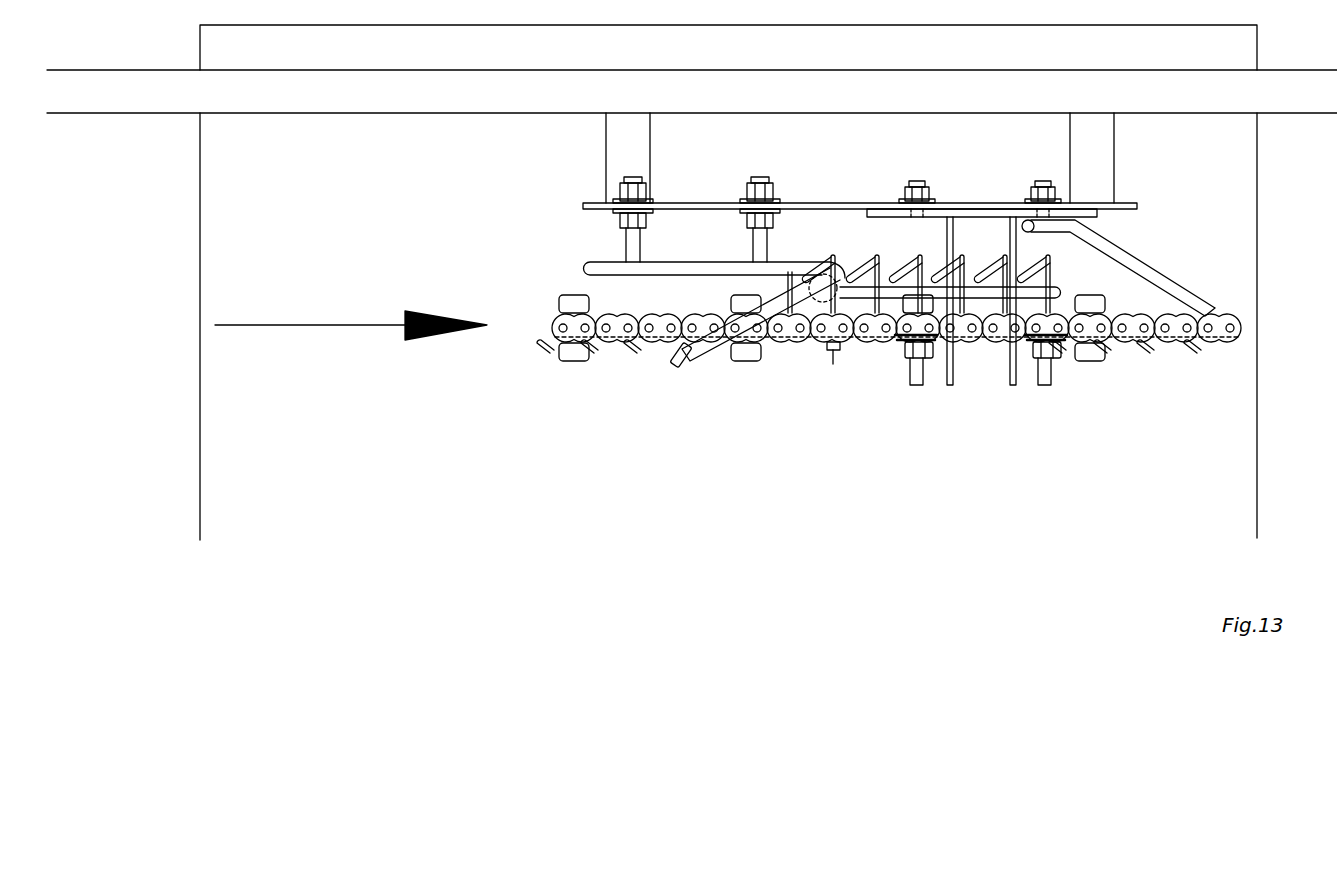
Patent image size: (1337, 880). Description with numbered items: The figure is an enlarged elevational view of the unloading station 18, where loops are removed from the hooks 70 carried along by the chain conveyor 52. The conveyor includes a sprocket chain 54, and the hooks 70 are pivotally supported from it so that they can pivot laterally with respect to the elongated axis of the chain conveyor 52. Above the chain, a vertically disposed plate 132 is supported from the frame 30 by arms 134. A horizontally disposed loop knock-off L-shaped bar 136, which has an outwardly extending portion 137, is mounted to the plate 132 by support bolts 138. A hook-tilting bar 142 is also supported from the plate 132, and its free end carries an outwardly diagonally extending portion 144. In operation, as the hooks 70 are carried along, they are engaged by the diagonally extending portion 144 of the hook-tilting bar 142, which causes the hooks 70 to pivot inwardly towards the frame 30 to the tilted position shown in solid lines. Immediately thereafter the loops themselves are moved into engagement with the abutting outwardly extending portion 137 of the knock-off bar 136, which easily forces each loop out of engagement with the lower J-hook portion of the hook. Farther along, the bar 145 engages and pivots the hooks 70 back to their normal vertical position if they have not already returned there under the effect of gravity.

The unloading station 18 is at (858, 464).
The frame 30 is at (848, 75).
The chain conveyor 52 is at (869, 355).
The sprocket chain 54 is at (560, 322).
The hooks 70 is at (643, 352).
The plate 132 is at (800, 203).
The arms 134 is at (606, 150).
The loop knock-off L-shaped bar 136 is at (590, 265).
The outwardly extending portion 137 is at (833, 364).
The support bolts 138 is at (758, 232).
The hook-tilting bar 142 is at (683, 370).
The outwardly diagonally extending portion 144 is at (700, 360).
The bar 145 is at (1118, 260).